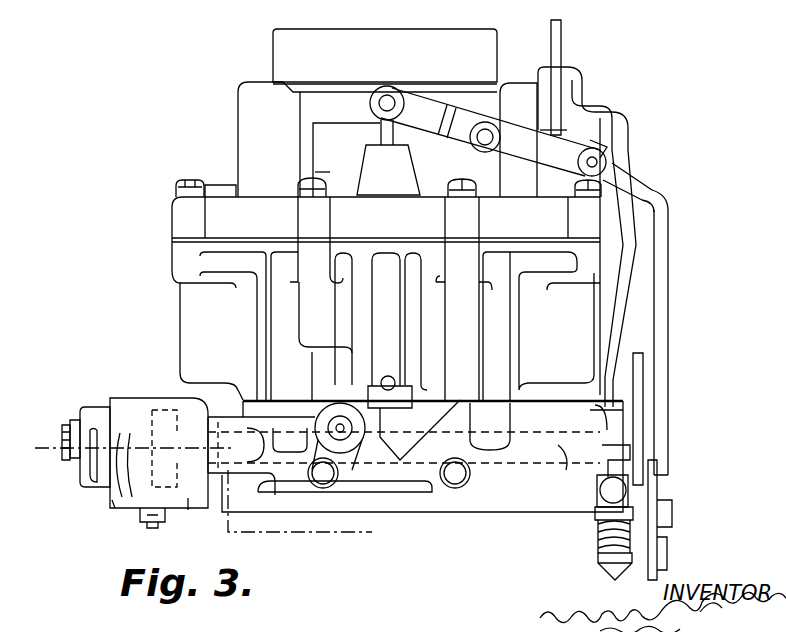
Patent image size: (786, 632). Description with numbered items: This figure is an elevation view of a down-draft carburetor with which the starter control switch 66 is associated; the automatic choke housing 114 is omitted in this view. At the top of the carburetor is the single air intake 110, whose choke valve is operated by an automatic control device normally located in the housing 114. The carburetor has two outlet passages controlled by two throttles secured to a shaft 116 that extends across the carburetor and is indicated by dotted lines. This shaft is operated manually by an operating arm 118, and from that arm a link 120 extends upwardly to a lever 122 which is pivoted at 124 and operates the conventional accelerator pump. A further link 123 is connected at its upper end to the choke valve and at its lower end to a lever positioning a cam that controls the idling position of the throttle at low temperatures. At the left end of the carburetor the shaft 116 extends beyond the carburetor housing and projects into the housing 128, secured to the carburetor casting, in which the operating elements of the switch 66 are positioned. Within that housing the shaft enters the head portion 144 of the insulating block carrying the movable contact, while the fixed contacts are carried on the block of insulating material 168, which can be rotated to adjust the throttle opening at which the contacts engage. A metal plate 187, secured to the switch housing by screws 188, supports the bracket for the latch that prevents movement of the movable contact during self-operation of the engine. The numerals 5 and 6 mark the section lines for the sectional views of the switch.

The air intake 110 is at (448, 21).
The housing 114 is at (437, 497).
The shaft 116 is at (565, 462).
The arm 118 is at (650, 496).
The link 120 is at (668, 390).
The lever 122 is at (418, 108).
The link 123 is at (625, 136).
The pivot 124 is at (490, 138).
The housing 128 is at (121, 404).
The head portion 144 is at (165, 420).
The block of insulating material 168 is at (90, 468).
The switch 66 is at (112, 501).
The metal plate 187 is at (188, 506).
The screws 188 is at (145, 527).
The section line 5 is at (46, 426).
The section line 6- 6 is at (42, 458).